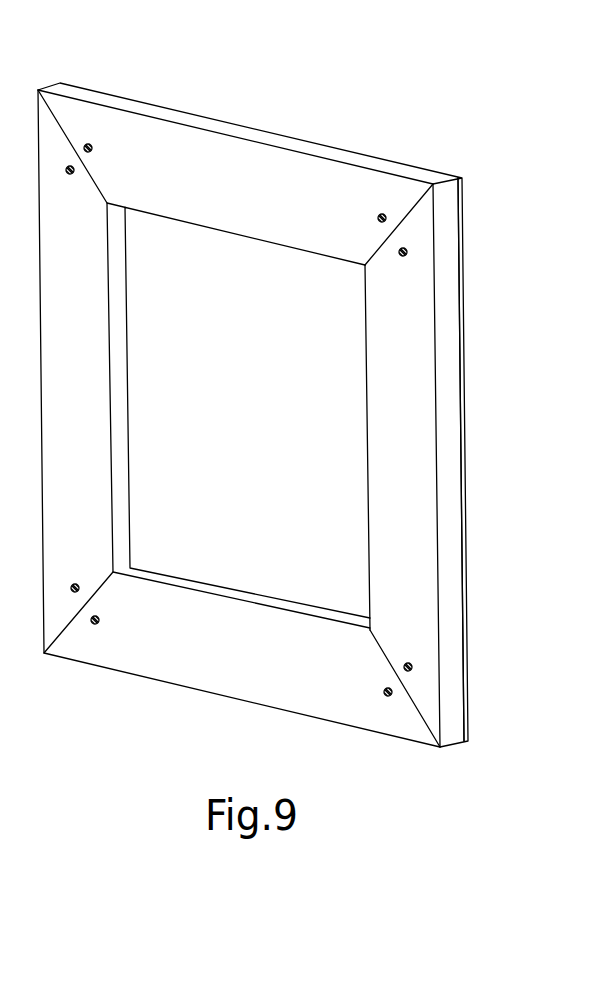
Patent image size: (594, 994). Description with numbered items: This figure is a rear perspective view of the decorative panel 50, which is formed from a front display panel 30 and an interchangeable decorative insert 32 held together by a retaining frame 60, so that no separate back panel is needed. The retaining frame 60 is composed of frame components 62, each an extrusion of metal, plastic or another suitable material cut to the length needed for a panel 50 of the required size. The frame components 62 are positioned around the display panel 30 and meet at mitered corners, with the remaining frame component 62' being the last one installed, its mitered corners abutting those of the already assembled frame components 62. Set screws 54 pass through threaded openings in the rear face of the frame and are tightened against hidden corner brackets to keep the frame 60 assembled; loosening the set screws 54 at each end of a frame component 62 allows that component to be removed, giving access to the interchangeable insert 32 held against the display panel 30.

The display panel 30 is at (465, 298).
The interchangeable decorative insert 32 is at (257, 445).
The decorative panel 50 is at (502, 437).
The set screws 54 is at (405, 249).
The retaining frame 60 is at (423, 366).
The frame components 62 is at (213, 425).
The remaining frame component 62' is at (394, 447).